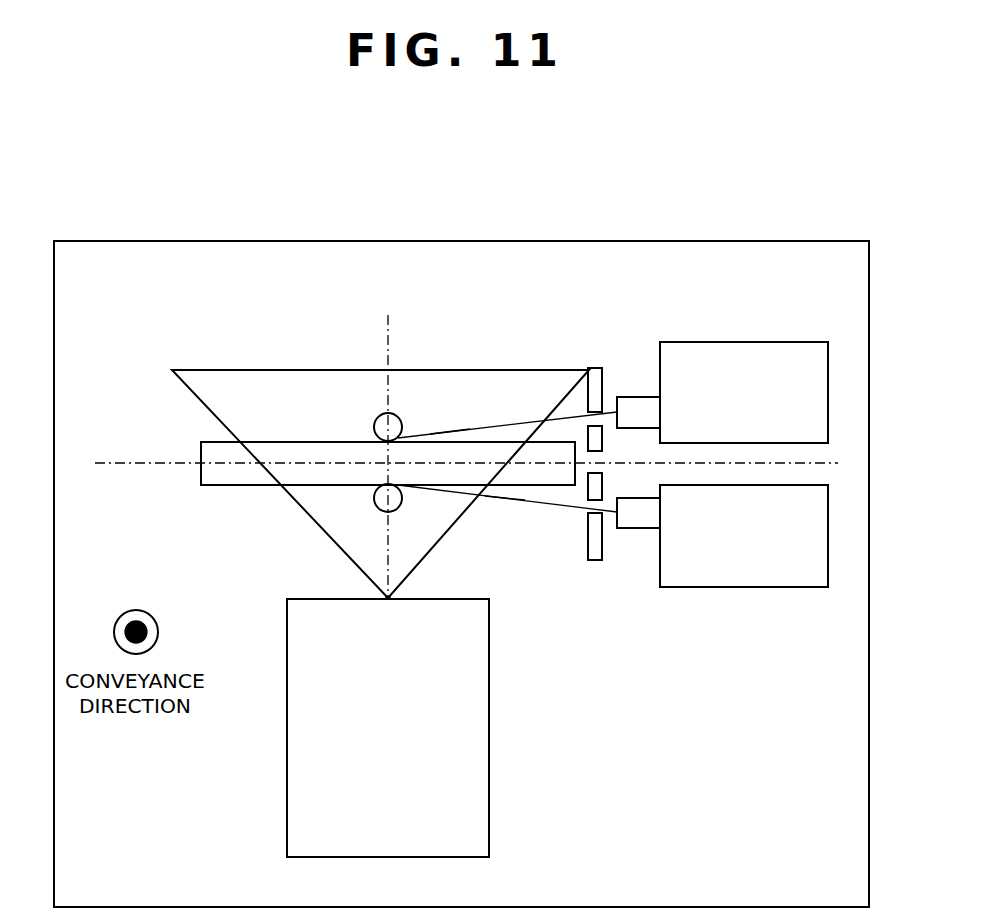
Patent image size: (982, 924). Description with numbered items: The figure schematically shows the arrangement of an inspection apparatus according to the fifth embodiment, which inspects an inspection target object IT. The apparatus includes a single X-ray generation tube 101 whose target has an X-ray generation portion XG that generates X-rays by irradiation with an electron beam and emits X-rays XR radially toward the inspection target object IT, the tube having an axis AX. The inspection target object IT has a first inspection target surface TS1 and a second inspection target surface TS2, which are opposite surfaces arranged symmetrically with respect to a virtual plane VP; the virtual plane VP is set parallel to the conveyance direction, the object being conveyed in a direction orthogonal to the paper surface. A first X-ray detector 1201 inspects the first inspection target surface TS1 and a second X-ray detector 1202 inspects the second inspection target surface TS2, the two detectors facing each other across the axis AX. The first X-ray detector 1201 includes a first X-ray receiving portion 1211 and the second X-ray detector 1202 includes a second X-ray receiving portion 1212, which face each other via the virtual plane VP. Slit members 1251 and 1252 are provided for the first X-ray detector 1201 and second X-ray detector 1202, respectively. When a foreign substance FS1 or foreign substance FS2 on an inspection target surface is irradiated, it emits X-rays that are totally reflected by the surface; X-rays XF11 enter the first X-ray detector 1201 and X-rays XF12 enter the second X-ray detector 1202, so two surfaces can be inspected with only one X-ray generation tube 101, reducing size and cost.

The X-rays XR is at (218, 384).
The axis AX is at (385, 352).
The virtual plane VP is at (127, 466).
The inspection target object IT is at (208, 450).
The foreign substance FS2 is at (375, 422).
The foreign substance FS1 is at (376, 503).
The X-rays XF12 is at (511, 427).
The X-rays XF11 is at (565, 506).
The second inspection target surface TS2 is at (450, 436).
The first inspection target surface TS1 is at (503, 498).
The slit member 1252 is at (597, 367).
The slit member 1251 is at (598, 561).
The second X-ray receiving portion 1212 is at (640, 397).
The first X-ray receiving portion 1211 is at (637, 529).
The second X-ray detector 1202 is at (743, 341).
The first X-ray detector 1201 is at (736, 588).
The X-ray generation portion XG is at (393, 597).
The X-ray generation tube 101 is at (490, 686).